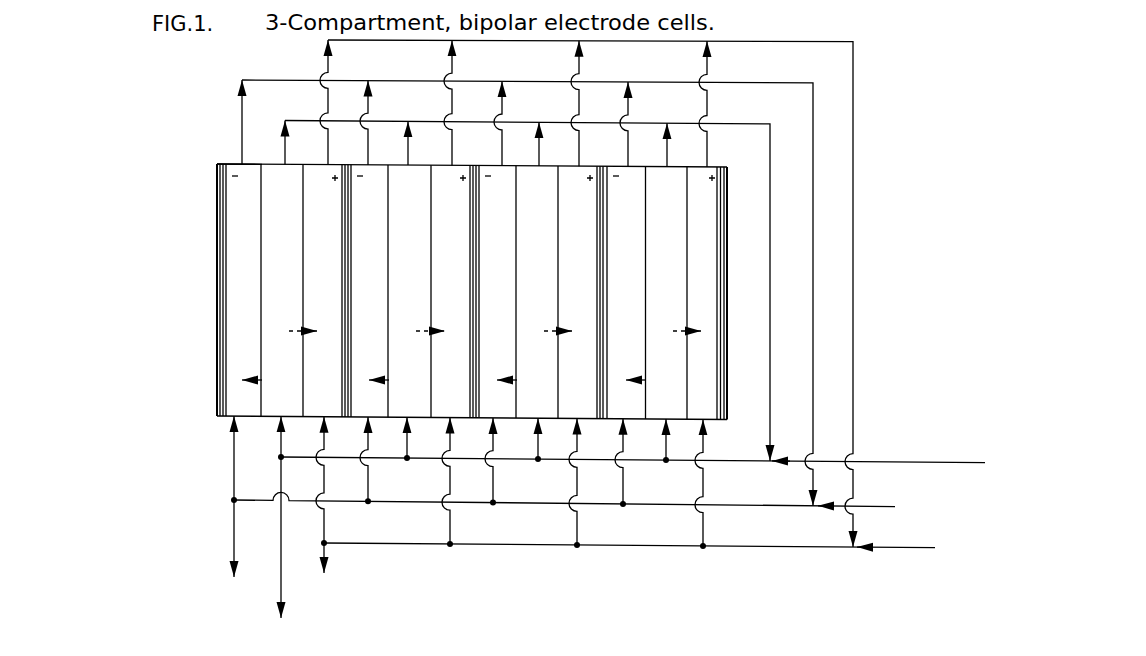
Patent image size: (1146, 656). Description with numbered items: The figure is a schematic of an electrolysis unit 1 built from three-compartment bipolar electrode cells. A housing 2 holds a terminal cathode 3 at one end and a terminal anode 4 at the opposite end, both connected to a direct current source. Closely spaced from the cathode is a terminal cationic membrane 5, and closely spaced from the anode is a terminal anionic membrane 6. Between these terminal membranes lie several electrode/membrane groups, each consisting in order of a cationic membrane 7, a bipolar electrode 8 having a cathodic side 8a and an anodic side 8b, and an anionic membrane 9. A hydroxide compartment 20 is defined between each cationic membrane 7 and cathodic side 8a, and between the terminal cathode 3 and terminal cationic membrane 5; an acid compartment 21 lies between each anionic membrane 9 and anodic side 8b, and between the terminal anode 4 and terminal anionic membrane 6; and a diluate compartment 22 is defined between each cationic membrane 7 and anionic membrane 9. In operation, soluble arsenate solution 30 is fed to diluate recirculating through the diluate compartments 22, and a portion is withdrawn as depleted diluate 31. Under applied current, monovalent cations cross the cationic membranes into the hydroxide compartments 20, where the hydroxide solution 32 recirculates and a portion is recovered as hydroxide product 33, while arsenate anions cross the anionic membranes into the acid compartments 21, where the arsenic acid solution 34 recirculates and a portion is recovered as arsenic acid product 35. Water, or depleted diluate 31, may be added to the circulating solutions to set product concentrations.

The electrolysis unit 1 is at (205, 388).
The housing 2 is at (230, 165).
The terminal cathode 3 is at (215, 253).
The terminal anode 4 is at (727, 223).
The terminal cationic membrane 5 is at (262, 256).
The terminal anionic membrane 6 is at (688, 262).
The cationic membrane 7 is at (388, 257).
The bipolar electrode 8 is at (357, 218).
The cathodic side 8a is at (351, 296).
The anodic side 8b is at (342, 280).
The anionic membrane 9 is at (305, 257).
The hydroxide compartment 20 is at (435, 292).
The acid compartment 21 is at (513, 293).
The diluate compartment 22 is at (471, 291).
The soluble arsenate solution 30 is at (682, 299).
The depleted diluate 31 is at (615, 549).
The hydroxide solution 32 is at (598, 305).
The hydroxide product 33 is at (157, 550).
The arsenic acid solution 34 is at (628, 307).
The arsenic acid product 35 is at (400, 574).